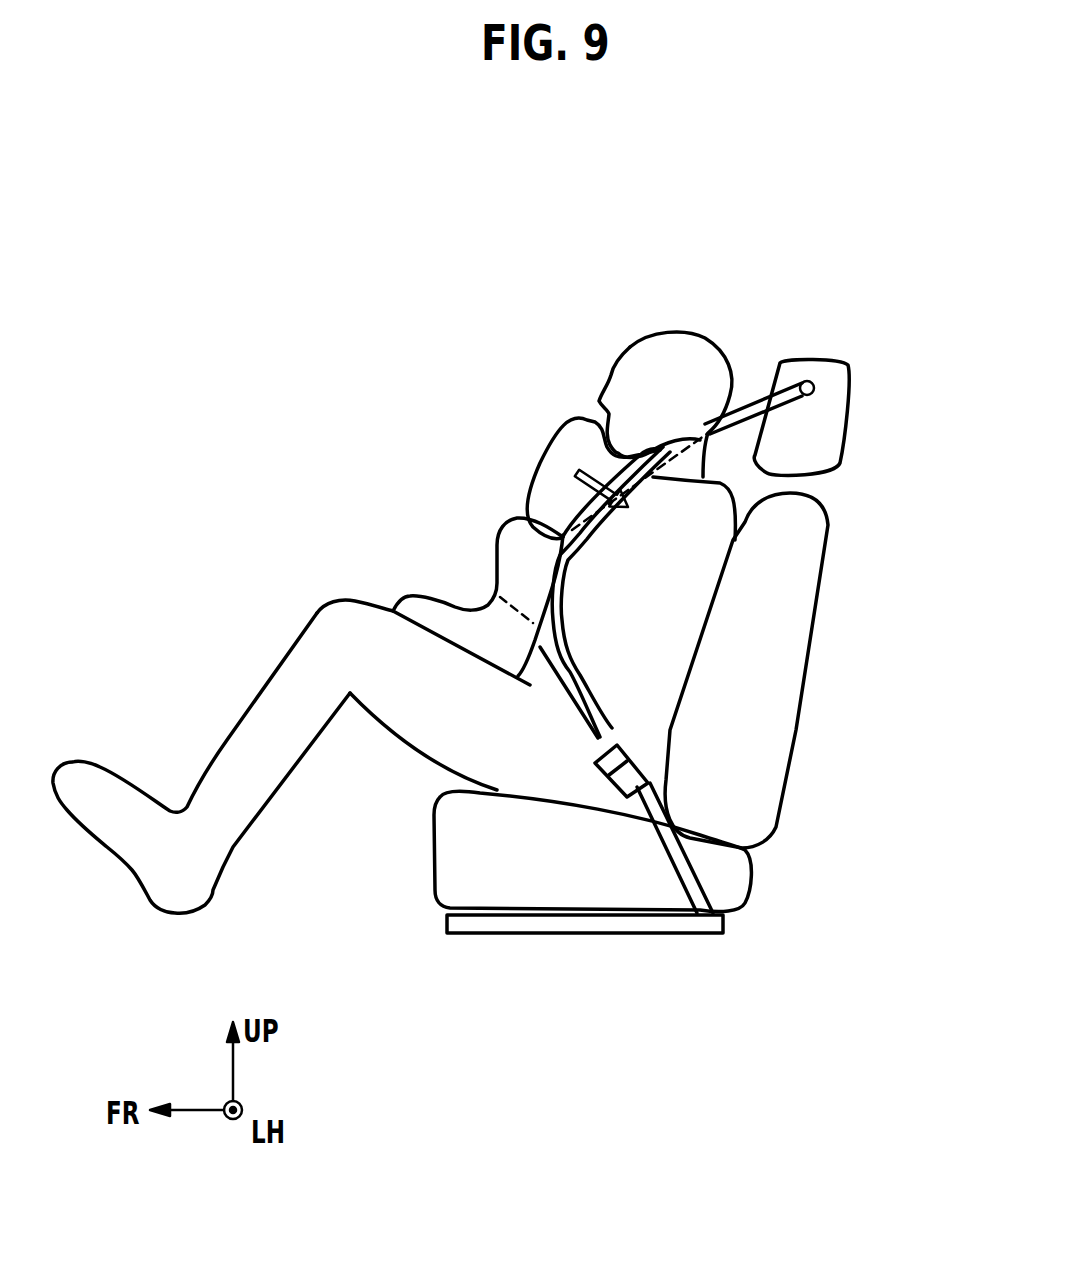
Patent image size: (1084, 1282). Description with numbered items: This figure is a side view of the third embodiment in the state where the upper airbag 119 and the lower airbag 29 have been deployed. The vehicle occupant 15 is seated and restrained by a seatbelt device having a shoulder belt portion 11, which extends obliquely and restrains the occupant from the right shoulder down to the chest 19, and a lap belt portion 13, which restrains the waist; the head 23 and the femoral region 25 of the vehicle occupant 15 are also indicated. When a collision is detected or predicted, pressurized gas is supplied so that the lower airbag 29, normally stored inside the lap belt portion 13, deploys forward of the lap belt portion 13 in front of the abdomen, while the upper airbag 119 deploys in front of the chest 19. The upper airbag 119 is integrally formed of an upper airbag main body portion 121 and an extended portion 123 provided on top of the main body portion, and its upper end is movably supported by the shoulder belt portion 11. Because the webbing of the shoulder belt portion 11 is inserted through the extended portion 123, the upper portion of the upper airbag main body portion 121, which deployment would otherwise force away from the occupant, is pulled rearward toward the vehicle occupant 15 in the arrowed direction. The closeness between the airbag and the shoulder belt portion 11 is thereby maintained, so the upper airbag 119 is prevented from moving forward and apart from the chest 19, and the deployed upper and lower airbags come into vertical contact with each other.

The shoulder belt portion 11 is at (570, 655).
The lap belt portion 13 is at (570, 707).
The vehicle occupant 15 is at (607, 352).
The chest 19 is at (587, 565).
The head 23 is at (668, 347).
The femoral region 25 is at (398, 740).
The lower airbag 29 is at (513, 583).
The upper airbag 119 is at (510, 482).
The upper airbag main body portion 121 is at (570, 440).
The extended portion 123 is at (658, 447).